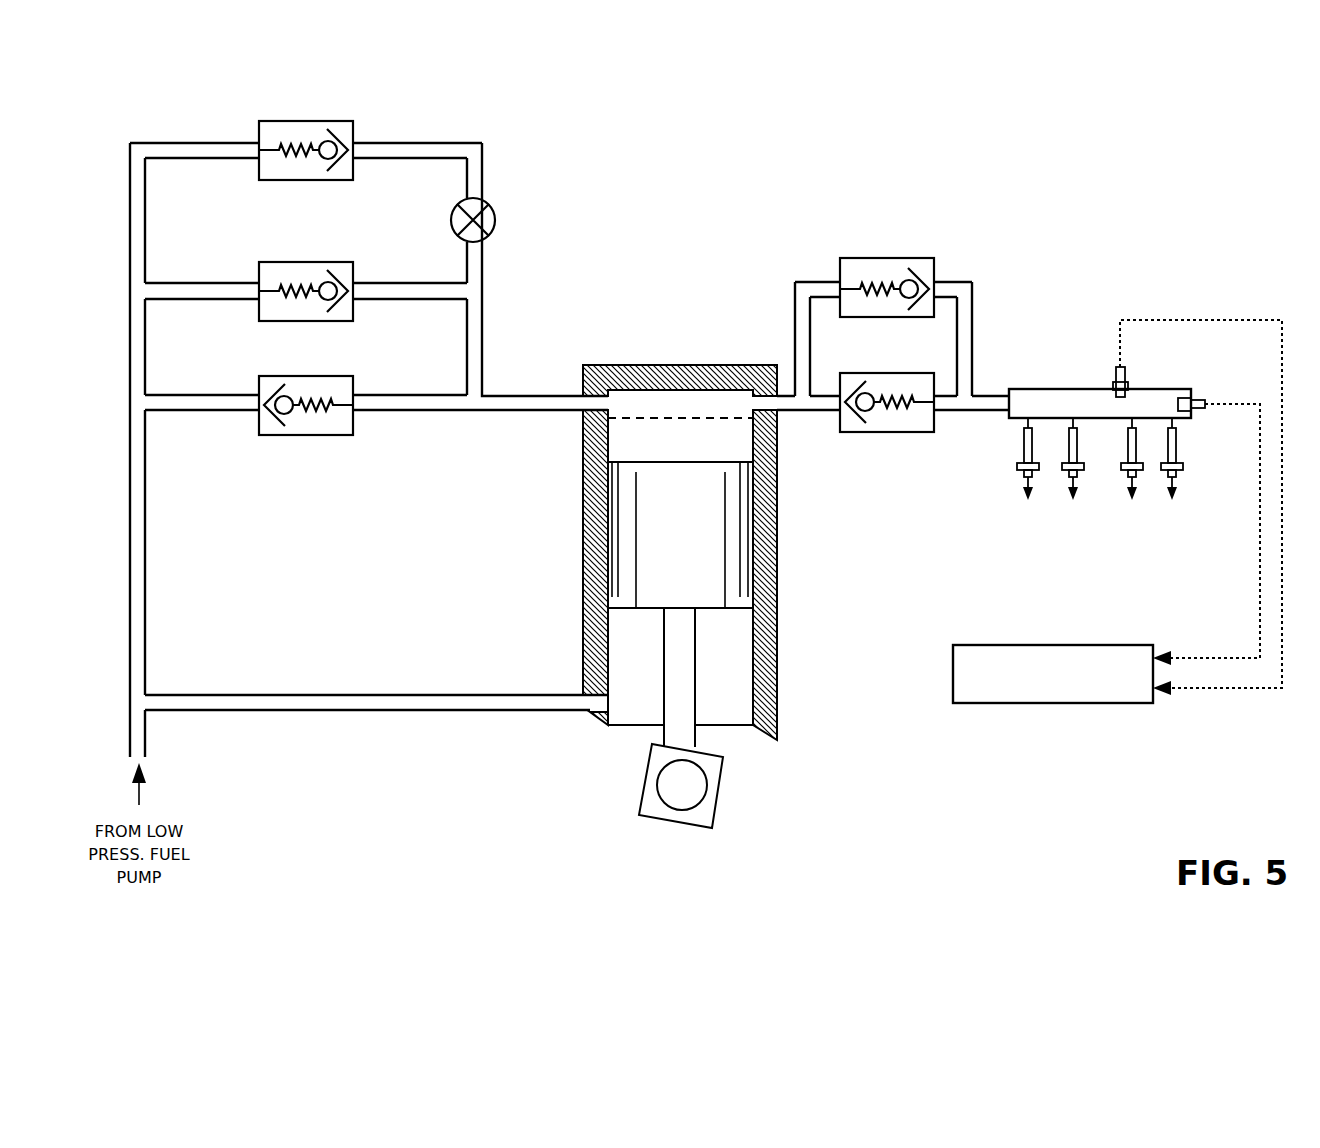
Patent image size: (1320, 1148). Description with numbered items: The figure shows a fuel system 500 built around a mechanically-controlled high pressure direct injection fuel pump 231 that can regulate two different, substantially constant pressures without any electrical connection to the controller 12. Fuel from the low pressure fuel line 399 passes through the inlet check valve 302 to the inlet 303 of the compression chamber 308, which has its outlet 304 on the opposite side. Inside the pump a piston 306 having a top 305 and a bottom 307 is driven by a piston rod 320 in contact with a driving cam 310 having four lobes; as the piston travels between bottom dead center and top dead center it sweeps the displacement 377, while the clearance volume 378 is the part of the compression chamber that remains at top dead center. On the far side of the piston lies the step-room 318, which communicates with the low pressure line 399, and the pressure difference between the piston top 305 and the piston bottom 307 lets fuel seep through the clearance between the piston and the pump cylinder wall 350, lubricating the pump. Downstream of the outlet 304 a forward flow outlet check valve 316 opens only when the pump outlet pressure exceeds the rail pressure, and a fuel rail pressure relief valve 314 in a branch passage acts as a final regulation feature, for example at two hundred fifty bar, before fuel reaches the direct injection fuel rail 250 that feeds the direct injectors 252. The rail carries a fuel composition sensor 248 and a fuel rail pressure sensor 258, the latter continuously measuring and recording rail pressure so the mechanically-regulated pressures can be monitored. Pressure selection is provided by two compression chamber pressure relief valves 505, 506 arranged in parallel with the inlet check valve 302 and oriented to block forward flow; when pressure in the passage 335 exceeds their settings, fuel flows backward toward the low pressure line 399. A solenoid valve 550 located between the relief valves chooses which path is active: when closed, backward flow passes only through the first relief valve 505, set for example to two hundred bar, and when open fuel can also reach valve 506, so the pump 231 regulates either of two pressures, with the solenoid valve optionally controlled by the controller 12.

The fuel system 500 is at (706, 474).
The high pressure pump 231 is at (721, 534).
The compression chamber pressure relief valve 506 is at (278, 181).
The first pressure relief valve 505 is at (278, 322).
The inlet check valve 302 is at (283, 435).
The solenoid valve 550 is at (496, 214).
The passage 335 is at (485, 412).
The low pressure fuel line 399 is at (144, 683).
The compression chamber inlet 303 is at (573, 393).
The pump outlet 304 is at (783, 393).
The compression chamber 308 is at (624, 406).
The clearance volume 378 is at (717, 414).
The displacement 377 is at (679, 447).
The piston top 305 is at (703, 462).
The pump piston 306 is at (733, 543).
The pump cylinder wall 350 is at (763, 553).
The piston bottom 307 is at (732, 611).
The step-room 318 is at (733, 713).
The piston rod 320 is at (697, 735).
The driving cam 310 is at (722, 780).
The fuel rail pressure relief valve 314 is at (907, 258).
The forward flow outlet check valve 316 is at (878, 373).
The direct injection fuel rail 250 is at (1022, 389).
The fuel rail pressure sensor 258 is at (1124, 367).
The fuel composition sensor 248 is at (1198, 398).
The direct injectors 252 is at (1082, 470).
The controller 12 is at (1053, 674).